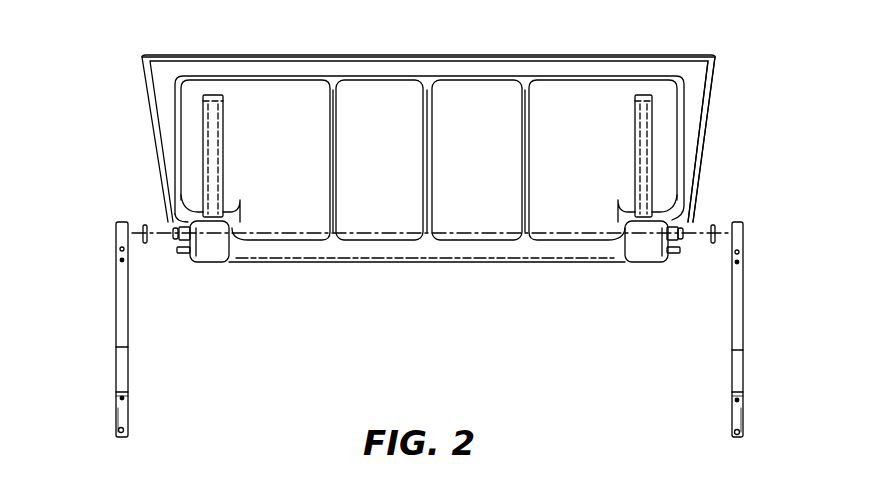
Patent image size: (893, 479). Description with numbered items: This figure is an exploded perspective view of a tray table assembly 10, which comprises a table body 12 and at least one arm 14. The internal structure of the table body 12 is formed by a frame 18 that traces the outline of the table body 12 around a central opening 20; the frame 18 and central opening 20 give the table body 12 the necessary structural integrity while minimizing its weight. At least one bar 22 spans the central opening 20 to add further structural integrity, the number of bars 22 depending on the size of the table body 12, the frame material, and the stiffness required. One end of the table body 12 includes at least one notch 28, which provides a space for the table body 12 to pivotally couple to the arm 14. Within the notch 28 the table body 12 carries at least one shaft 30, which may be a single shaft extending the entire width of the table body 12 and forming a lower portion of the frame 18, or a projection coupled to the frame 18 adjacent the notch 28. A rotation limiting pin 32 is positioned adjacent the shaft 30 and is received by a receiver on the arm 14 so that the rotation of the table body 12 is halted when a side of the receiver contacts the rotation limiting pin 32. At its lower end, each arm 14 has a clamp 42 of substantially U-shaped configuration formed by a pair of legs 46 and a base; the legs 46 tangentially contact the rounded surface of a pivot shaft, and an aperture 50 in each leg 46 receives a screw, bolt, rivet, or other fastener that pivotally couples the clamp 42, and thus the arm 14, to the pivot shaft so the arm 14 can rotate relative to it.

The tray table assembly 10 is at (402, 131).
The table body 12 is at (176, 70).
The arm 14 is at (122, 308).
The frame 18 is at (684, 65).
The central opening 20 is at (573, 125).
The bar 22 is at (527, 138).
The notch 28 is at (160, 246).
The shaft 30 is at (178, 228).
The rotation limiting pin 32 is at (183, 254).
The clamp 42 is at (120, 415).
The legs 46 is at (126, 422).
The aperture 50 is at (121, 433).